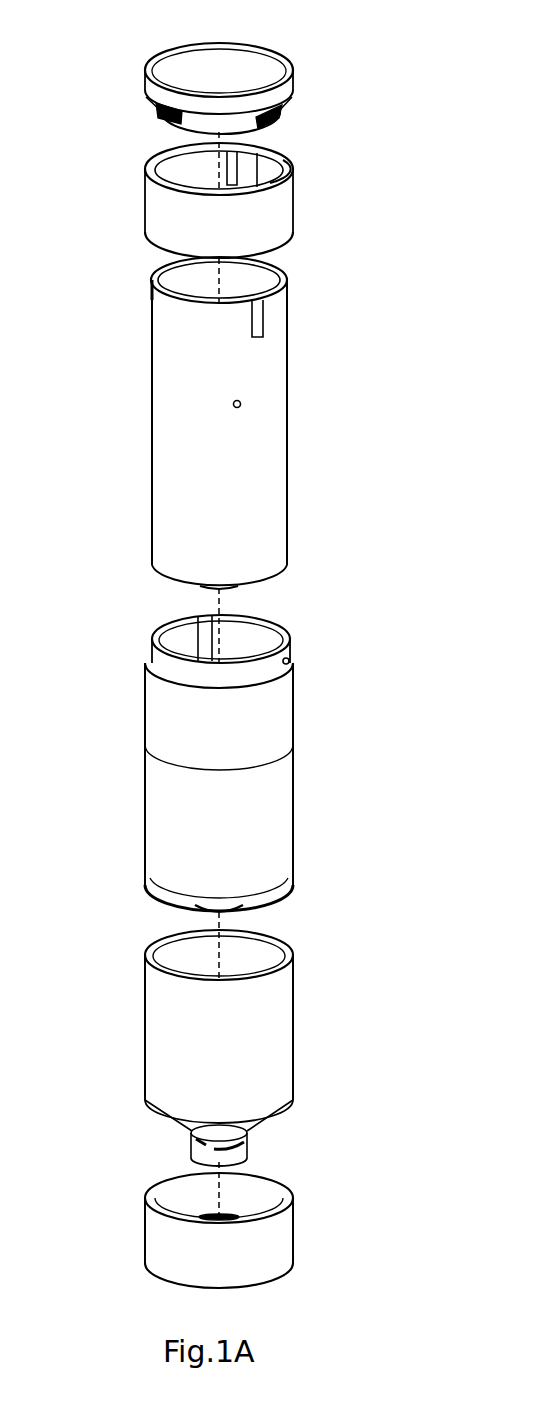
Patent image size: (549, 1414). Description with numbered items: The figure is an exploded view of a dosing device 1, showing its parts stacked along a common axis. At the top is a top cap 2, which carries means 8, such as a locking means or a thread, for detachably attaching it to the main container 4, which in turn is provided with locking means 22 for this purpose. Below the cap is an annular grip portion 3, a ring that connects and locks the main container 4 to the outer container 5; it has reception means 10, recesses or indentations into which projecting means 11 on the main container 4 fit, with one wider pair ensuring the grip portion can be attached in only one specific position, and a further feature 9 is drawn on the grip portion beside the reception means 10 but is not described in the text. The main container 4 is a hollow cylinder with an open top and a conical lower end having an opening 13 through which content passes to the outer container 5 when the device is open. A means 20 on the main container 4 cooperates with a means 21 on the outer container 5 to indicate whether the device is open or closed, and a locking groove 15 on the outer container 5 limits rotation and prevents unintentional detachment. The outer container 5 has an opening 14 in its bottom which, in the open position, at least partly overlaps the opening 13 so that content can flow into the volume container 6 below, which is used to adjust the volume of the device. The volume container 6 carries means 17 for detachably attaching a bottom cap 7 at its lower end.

The device 1 is at (378, 611).
The top cap 2 is at (277, 70).
The annular grip portion 3 is at (288, 213).
The main container 4 is at (268, 448).
The outer container 5 is at (267, 787).
The volume container 6 is at (248, 1040).
The bottom cap 7 is at (248, 1243).
The means to detachably attach the top cap 8 is at (160, 112).
The pin 9 is at (290, 167).
The reception means 10 is at (247, 160).
The projecting means 11 is at (152, 298).
The opening 13 is at (237, 583).
The opening 14 is at (223, 912).
The locking groove 15 is at (205, 633).
The means to detachably attach the volume container 17 is at (240, 1142).
The means on the main container 20 is at (243, 403).
The means on the outer container 21 is at (290, 660).
The locking means 22 is at (272, 275).